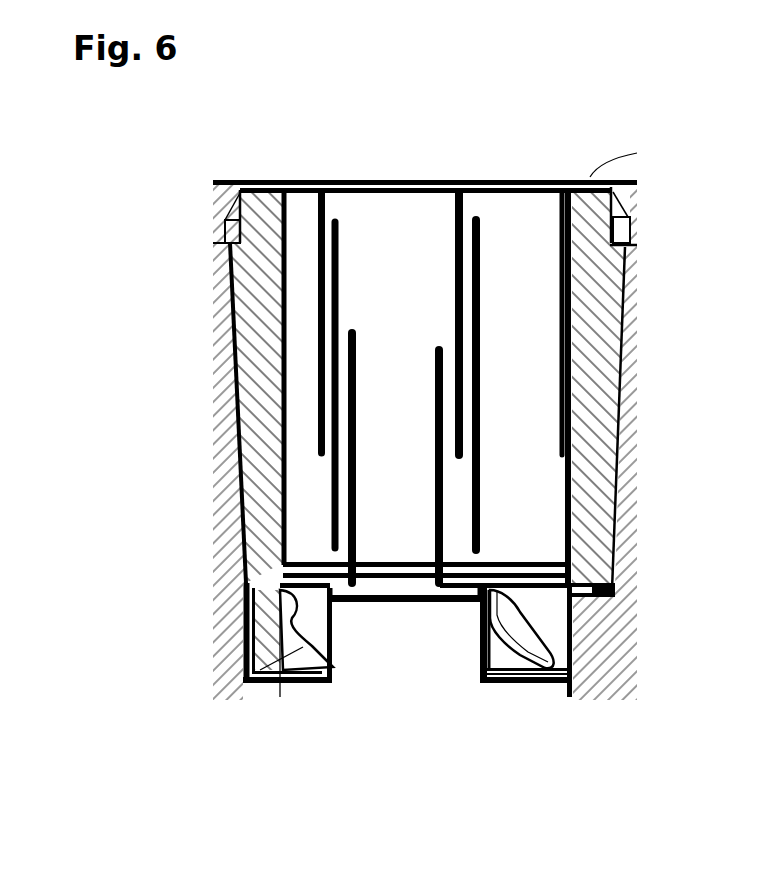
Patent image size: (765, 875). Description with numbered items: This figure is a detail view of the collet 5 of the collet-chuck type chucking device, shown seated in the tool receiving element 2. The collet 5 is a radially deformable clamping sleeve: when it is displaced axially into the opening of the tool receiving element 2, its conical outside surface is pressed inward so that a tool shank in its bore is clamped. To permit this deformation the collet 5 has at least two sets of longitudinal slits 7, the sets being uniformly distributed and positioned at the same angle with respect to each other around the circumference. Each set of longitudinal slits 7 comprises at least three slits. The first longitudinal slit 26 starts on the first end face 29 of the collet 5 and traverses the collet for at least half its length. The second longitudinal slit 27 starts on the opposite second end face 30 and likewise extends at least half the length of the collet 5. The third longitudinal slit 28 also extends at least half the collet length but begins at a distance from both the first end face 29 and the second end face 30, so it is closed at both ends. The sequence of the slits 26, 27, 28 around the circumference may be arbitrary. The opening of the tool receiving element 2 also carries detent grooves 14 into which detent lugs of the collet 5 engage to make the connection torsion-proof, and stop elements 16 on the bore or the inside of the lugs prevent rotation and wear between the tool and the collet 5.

The tool receiving element 2 is at (233, 627).
The collet 5 is at (263, 448).
The longitudinal slits 7 is at (438, 194).
The detent grooves 14 is at (302, 687).
The stop elements 16 is at (247, 680).
The first longitudinal slit 26 is at (317, 288).
The second longitudinal slit 27 is at (357, 445).
The third longitudinal slit 28 is at (331, 258).
The first end face 29 is at (307, 178).
The second end face 30 is at (383, 595).